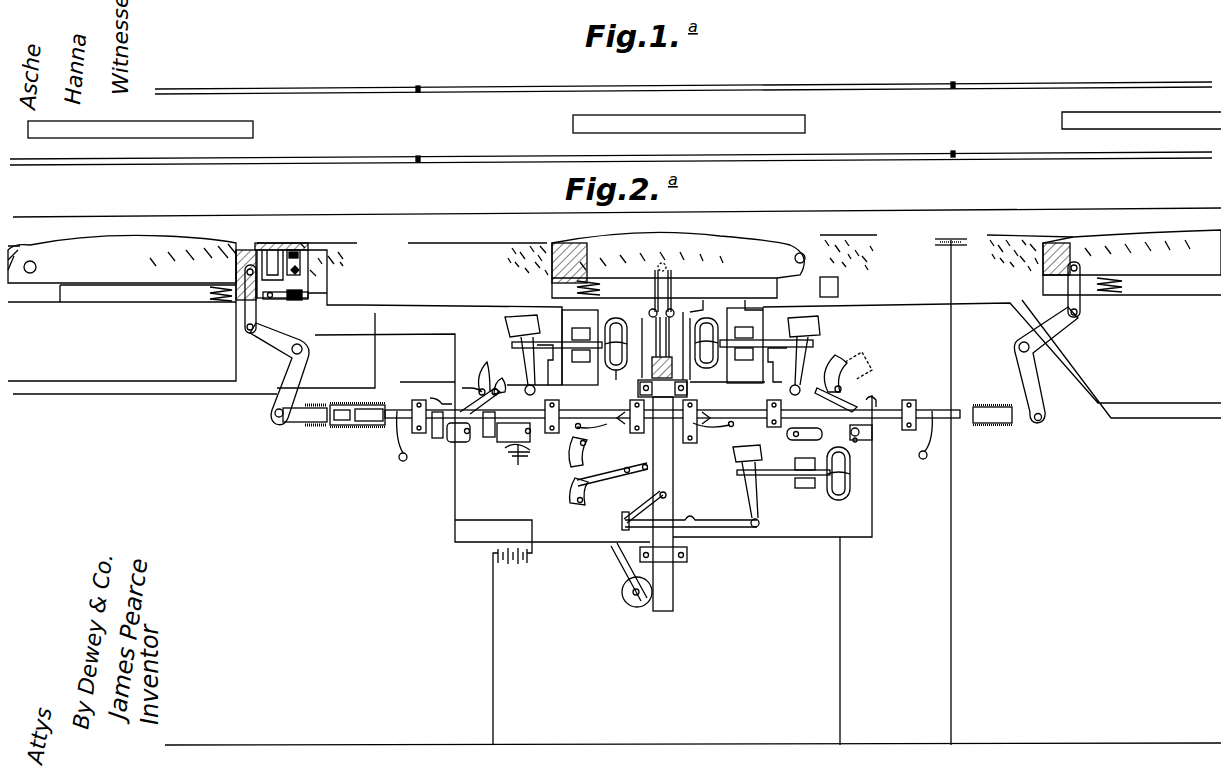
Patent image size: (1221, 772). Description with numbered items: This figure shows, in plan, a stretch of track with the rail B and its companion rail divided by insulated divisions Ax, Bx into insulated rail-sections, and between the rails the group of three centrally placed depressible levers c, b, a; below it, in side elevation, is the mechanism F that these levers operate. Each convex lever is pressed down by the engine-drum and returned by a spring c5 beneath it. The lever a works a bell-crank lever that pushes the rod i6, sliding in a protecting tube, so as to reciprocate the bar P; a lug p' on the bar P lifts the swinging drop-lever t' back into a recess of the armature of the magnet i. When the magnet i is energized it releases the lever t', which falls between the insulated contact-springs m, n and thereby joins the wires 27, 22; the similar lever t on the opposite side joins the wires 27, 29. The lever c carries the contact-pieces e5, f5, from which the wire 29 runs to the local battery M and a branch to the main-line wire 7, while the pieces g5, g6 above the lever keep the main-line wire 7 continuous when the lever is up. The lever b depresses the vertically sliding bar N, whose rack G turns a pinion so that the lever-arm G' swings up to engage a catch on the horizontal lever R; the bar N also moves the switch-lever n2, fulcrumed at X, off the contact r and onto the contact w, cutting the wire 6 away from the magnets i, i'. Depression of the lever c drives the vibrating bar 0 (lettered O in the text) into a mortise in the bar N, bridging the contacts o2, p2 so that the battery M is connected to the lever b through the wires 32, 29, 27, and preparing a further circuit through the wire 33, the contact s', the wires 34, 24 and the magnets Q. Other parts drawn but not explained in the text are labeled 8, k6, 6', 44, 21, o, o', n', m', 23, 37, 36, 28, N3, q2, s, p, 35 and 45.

In FIG. 1A, the depressible lever c is at (179, 128).
In FIG. 2A, the depressible lever c is at (122, 268).
In FIG. 1A, the depressible lever b is at (679, 124).
In FIG. 2A, the depressible lever b is at (678, 265).
In FIG. 1A, the depressible lever a is at (1126, 124).
In FIG. 2A, the depressible lever a is at (1132, 262).
In FIG. 1A, the insulated division Ax is at (678, 78).
In FIG. 1A, the insulated division Bx is at (679, 148).
In FIG. 2A, the base line 8 is at (663, 744).
In FIG. 2A, the contact-piece g5 is at (276, 250).
In FIG. 2A, the contact-piece g6 is at (300, 252).
In FIG. 2A, the contact-piece e5 is at (290, 299).
In FIG. 2A, the contact-piece f5 is at (302, 294).
In FIG. 2A, the lever k6 is at (296, 371).
In FIG. 2A, the main-line wire 7 is at (236, 351).
In FIG. 2A, the conducting-wire 6 is at (323, 405).
In FIG. 2A, the frame bar 6' is at (943, 370).
In FIG. 2A, the wire 29 is at (320, 336).
In FIG. 2A, the wire 44 is at (493, 654).
In FIG. 2A, the wire 21 is at (569, 541).
In FIG. 2A, the local battery M is at (512, 565).
In FIG. 2A, the rod i6 is at (302, 421).
In FIG. 2A, the reciprocating bar P is at (731, 418).
In FIG. 2A, the vibrating bar 0 is at (402, 428).
In FIG. 2A, the hook o is at (900, 435).
In FIG. 2A, the wire 32 is at (442, 414).
In FIG. 2A, the contact o2 is at (458, 440).
In FIG. 2A, the contact p2 is at (488, 437).
In FIG. 2A, the contact s' is at (518, 429).
In FIG. 2A, the wire 34 is at (641, 437).
In FIG. 2A, the link o' is at (492, 401).
In FIG. 2A, the pawl n' is at (478, 377).
In FIG. 2A, the pawl m' is at (504, 379).
In FIG. 2A, the link 23 is at (661, 394).
In FIG. 2A, the drop-lever t is at (522, 355).
In FIG. 2A, the wire 33 is at (560, 338).
In FIG. 2A, the electromagnet i is at (616, 349).
In FIG. 2A, the wire 27 is at (636, 379).
In FIG. 2A, the drop-lever t' is at (802, 355).
In FIG. 2A, the frame 37 is at (762, 337).
In FIG. 2A, the electromagnet i' is at (706, 343).
In FIG. 2A, the contact-spring m is at (829, 373).
In FIG. 2A, the contact-spring n is at (858, 368).
In FIG. 2A, the lug p' is at (808, 400).
In FIG. 2A, the link 36 is at (877, 402).
In FIG. 2A, the rods 28 is at (672, 340).
In FIG. 2A, the block N3 is at (672, 350).
In FIG. 2A, the vertically-sliding bar N is at (665, 493).
In FIG. 2A, the horizontal lever R is at (700, 520).
In FIG. 2A, the hammer lever q2 is at (736, 456).
In FIG. 2A, the magnet Q is at (838, 473).
In FIG. 2A, the block s is at (800, 437).
In FIG. 2A, the wire 24 is at (830, 449).
In FIG. 2A, the pivot block p is at (861, 442).
In FIG. 2A, the contact-point w is at (570, 456).
In FIG. 2A, the switch-lever n2 is at (612, 474).
In FIG. 2A, the contact-point r is at (572, 500).
In FIG. 2A, the fulcrum X is at (633, 479).
In FIG. 2A, the rack G is at (645, 592).
In FIG. 2A, the lever-arm G' is at (617, 572).
In FIG. 2A, the wire 22 is at (872, 512).
In FIG. 2A, the wire 35 is at (840, 526).
In FIG. 2A, the wire 45 is at (951, 556).
In FIG. 2A, the track rail B is at (951, 230).
In FIG. 2A, the mechanism F is at (565, 227).
In FIG. 2A, the spring c5 is at (1117, 284).